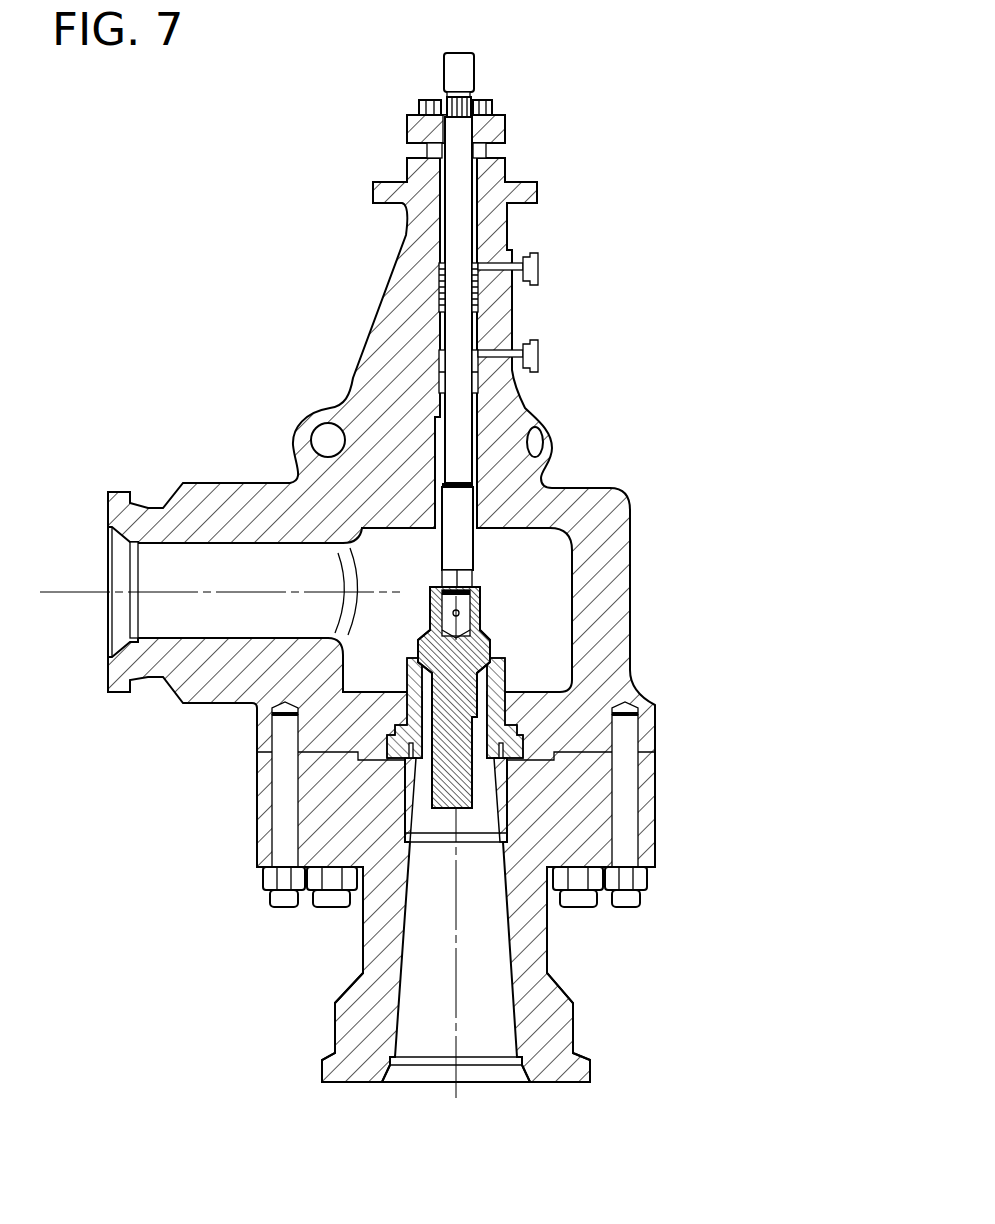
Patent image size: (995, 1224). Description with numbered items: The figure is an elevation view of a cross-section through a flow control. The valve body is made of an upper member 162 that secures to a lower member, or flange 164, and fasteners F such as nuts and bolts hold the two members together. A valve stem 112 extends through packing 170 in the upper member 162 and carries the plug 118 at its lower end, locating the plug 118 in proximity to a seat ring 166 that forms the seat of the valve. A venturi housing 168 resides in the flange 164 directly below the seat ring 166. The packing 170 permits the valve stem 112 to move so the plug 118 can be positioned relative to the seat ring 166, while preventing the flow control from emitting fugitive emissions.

The valve stem 112 is at (465, 362).
The plug 118 is at (497, 639).
The upper member 162 is at (202, 485).
The flange 164 is at (575, 1038).
The seat ring 166 is at (506, 683).
The venturi housing 168 is at (508, 823).
The packing 170 is at (486, 311).
The fasteners F is at (273, 902).